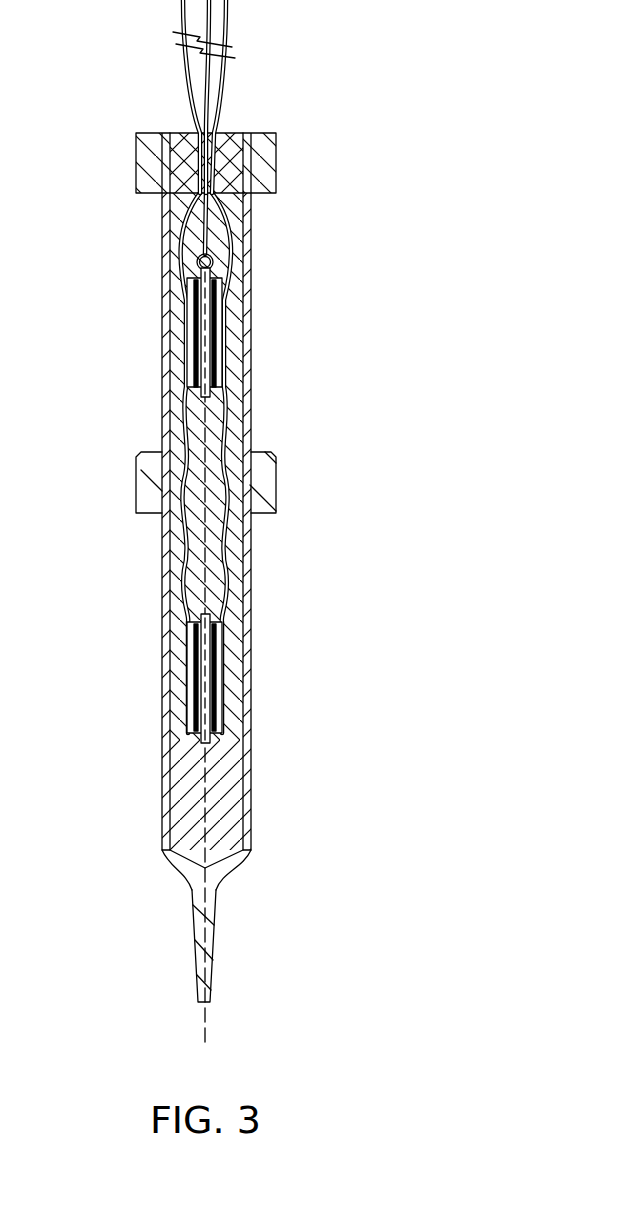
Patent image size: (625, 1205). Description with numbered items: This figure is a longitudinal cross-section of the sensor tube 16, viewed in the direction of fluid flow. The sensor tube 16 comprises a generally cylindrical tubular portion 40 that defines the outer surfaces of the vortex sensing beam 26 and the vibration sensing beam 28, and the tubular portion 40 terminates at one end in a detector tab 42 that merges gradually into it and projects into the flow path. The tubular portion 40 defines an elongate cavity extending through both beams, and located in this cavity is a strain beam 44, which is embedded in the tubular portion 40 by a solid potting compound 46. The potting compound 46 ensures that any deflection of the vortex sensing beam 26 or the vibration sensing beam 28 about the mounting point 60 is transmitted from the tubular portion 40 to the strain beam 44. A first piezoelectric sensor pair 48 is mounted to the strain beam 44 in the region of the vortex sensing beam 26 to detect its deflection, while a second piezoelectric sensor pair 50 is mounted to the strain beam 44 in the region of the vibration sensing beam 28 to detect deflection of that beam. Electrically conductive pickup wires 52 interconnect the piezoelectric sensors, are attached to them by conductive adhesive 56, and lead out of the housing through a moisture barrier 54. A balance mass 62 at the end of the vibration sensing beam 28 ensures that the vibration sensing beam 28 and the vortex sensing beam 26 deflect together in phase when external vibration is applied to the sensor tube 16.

The sensor tube 16 is at (320, 570).
The vortex sensing beam 26 is at (291, 745).
The vibration sensing beam 28 is at (276, 292).
The tubular portion 40 is at (243, 607).
The detector tab 42 is at (208, 963).
The strain beam 44 is at (207, 303).
The potting compound 46 is at (187, 820).
The first piezoelectric sensor pair 48 is at (190, 675).
The second piezoelectric sensor pair 50 is at (192, 340).
The pickup wires 52 is at (227, 13).
The moisture barrier 54 is at (180, 153).
The conductive adhesive 56 is at (230, 367).
The mounting point 60 is at (148, 467).
The balance mass 62 is at (268, 143).